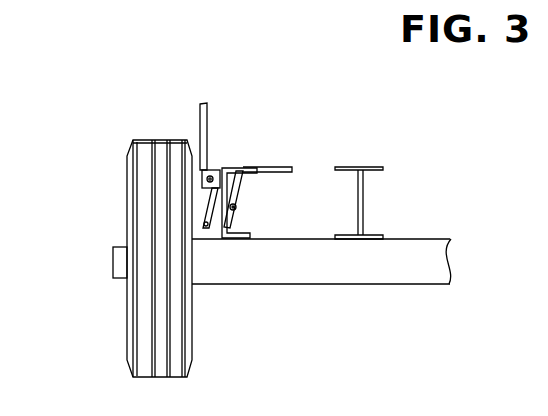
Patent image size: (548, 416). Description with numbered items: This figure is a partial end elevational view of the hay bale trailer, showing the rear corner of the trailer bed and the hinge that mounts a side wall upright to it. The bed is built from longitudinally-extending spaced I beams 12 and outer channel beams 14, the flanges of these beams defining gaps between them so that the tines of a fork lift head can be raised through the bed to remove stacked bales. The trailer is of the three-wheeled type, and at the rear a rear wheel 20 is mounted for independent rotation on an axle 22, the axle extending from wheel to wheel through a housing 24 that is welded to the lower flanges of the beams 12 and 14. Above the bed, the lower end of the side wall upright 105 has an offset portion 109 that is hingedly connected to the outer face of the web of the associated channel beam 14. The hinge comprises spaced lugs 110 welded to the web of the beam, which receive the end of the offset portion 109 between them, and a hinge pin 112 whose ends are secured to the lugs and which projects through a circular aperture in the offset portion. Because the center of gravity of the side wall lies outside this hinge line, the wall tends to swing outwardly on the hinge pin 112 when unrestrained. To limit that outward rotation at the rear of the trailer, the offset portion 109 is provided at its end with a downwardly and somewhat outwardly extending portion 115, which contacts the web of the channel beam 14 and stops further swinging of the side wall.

The I beam 12 is at (363, 202).
The outer channel beam 14 is at (243, 235).
The rear wheel 20 is at (140, 350).
The axle 22 is at (125, 263).
The housing 24 is at (281, 269).
The upright 105 is at (208, 117).
The offset portion 109 is at (203, 179).
The lug 110 is at (215, 168).
The hinge pin 112 is at (208, 176).
The downwardly and outwardly extending portion 115 is at (210, 205).